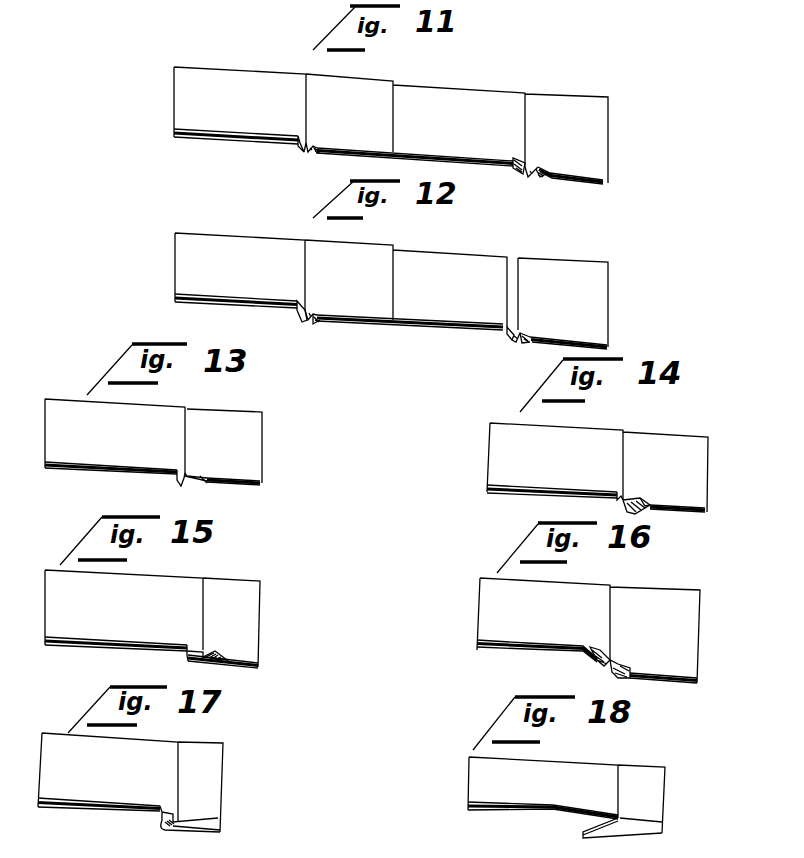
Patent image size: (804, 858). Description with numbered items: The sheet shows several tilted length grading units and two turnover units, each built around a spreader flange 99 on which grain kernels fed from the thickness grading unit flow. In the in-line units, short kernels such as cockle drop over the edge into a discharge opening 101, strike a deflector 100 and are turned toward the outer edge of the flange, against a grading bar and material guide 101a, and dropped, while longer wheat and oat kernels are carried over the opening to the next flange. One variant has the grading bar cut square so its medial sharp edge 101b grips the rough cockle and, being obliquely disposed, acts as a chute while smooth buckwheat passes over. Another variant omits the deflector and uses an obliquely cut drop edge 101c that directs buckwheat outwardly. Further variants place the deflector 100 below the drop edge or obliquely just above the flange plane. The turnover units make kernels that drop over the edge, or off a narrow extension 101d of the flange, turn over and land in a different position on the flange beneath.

In FIG. 11, the spreader flange 99 is at (250, 136).
In FIG. 12, the spreader flange 99 is at (252, 300).
In FIG. 13, the spreader flange 99 is at (90, 466).
In FIG. 14, the spreader flange 99 is at (520, 490).
In FIG. 15, the spreader flange 99 is at (152, 640).
In FIG. 16, the spreader flange 99 is at (545, 642).
In FIG. 17, the spreader flange 99 is at (102, 800).
In FIG. 18, the spreader flange 99 is at (500, 802).
In FIG. 11, the deflector 100 is at (302, 150).
In FIG. 12, the deflector 100 is at (310, 306).
In FIG. 13, the deflector 100 is at (180, 487).
In FIG. 15, the deflector 100 is at (192, 657).
In FIG. 16, the deflector 100 is at (592, 664).
In FIG. 11, the discharge opening 101 is at (314, 147).
In FIG. 12, the discharge opening 101 is at (318, 312).
In FIG. 14, the discharge opening 101 is at (630, 500).
In FIG. 15, the discharge opening 101 is at (208, 642).
In FIG. 11, the grading bar and material guide 101a is at (318, 154).
In FIG. 12, the grading bar and material guide 101a is at (316, 326).
In FIG. 13, the grading bar and material guide 101a is at (214, 482).
In FIG. 14, the grading bar and material guide 101a is at (651, 505).
In FIG. 15, the grading bar and material guide 101a is at (222, 652).
In FIG. 16, the grading bar and material guide 101a is at (625, 677).
In FIG. 13, the medial sharp edge 101b is at (200, 473).
In FIG. 14, the drop edge 101c is at (615, 490).
In FIG. 18, the narrow extension 101d is at (605, 812).